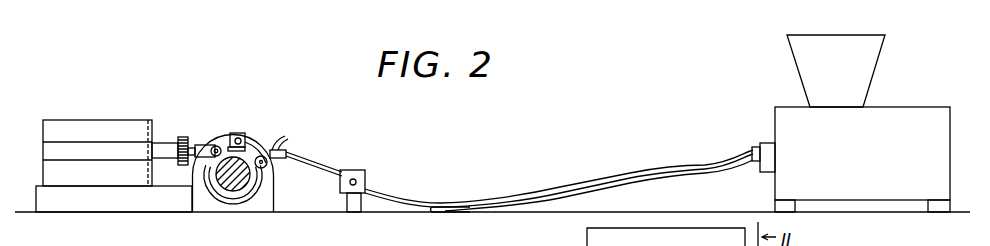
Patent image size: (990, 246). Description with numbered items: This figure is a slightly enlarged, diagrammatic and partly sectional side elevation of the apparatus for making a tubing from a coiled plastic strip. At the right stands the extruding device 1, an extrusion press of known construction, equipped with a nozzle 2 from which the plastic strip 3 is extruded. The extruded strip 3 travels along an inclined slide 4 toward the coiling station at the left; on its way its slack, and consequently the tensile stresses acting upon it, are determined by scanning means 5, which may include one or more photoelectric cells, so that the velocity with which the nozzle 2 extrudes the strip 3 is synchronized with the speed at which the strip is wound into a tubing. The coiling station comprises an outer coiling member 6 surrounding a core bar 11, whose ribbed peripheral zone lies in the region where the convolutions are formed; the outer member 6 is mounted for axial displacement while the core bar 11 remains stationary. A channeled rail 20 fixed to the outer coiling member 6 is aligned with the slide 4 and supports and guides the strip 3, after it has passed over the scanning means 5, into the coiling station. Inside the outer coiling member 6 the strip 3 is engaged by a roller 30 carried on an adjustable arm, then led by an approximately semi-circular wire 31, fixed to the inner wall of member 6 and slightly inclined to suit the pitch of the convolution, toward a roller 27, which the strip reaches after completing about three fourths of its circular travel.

The extruding device 1 is at (918, 118).
The nozzle 2 is at (758, 146).
The plastic strip 3 is at (316, 166).
The inclined slide 4 is at (720, 176).
The scanning means 5 is at (366, 172).
The outer coiling member 6 is at (241, 133).
The core bar 11 is at (230, 180).
The channeled rail 20 is at (280, 160).
The roller 27 is at (262, 157).
The roller 30 is at (220, 147).
The semi-circular wire 31 is at (249, 186).